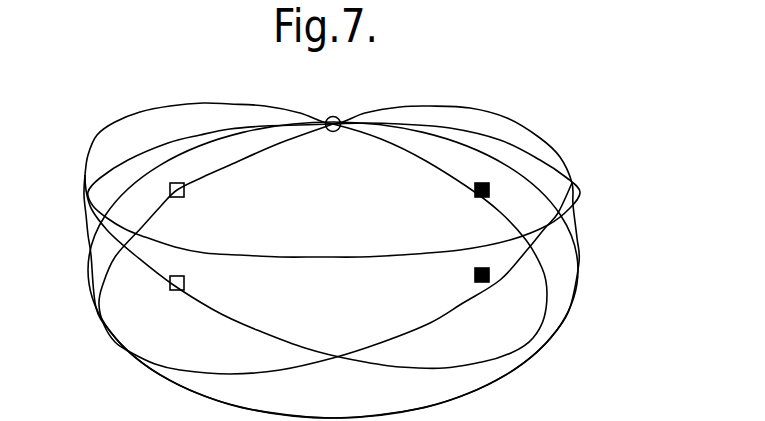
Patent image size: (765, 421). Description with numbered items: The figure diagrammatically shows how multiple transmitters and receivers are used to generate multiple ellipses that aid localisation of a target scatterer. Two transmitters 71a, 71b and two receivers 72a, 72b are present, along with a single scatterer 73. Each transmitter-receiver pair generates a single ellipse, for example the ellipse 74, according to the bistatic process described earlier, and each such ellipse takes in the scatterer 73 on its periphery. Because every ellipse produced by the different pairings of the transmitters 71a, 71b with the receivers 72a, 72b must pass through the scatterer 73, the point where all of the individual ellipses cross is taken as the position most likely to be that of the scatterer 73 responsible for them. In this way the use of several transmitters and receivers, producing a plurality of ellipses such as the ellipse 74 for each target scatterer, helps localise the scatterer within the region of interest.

The transmitter 71a is at (184, 192).
The transmitter 71b is at (184, 284).
The receiver 72a is at (474, 191).
The receiver 72b is at (472, 277).
The scatterer 73 is at (337, 114).
The ellipse 74 is at (578, 283).